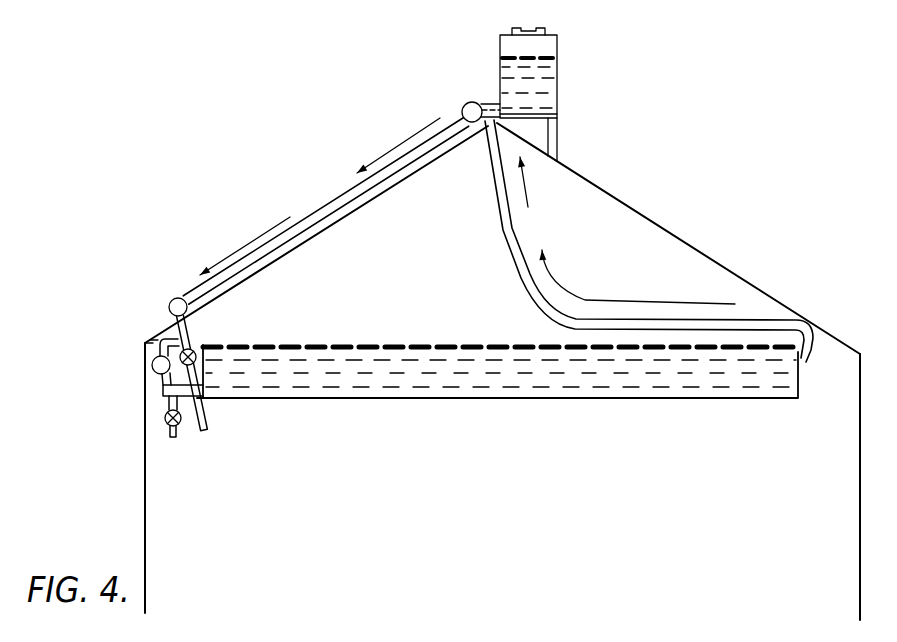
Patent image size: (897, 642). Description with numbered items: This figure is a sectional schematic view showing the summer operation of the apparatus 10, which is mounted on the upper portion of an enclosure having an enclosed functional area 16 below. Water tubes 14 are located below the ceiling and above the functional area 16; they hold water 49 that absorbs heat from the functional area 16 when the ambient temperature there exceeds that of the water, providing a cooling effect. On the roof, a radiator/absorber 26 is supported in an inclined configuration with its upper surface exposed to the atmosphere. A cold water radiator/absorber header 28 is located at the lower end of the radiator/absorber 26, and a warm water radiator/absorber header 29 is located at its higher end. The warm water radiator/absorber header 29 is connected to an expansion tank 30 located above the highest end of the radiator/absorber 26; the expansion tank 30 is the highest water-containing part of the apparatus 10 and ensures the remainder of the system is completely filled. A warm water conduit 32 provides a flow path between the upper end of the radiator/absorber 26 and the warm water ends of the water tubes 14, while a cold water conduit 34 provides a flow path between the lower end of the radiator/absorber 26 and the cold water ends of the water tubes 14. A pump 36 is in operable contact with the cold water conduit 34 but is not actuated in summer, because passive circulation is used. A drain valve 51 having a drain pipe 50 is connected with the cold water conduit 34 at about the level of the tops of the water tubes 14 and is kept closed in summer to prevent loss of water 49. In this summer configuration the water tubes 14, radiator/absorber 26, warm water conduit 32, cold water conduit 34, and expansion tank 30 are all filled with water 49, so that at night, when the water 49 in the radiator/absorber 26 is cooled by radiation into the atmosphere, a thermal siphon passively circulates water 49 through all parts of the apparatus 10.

The apparatus 10 is at (135, 208).
The water tubes 14 is at (697, 400).
The functional area 16 is at (480, 556).
The radiator/absorber 26 is at (337, 198).
The cold water radiator/absorber header 28 is at (170, 300).
The warm water radiator/absorber header 29 is at (466, 103).
The expansion tank 30 is at (558, 48).
The warm water conduit 32 is at (522, 231).
The cold water conduit 34 is at (143, 343).
The pump 36 is at (150, 369).
The water 49 is at (517, 87).
The drain pipe 50 is at (212, 412).
The drain valve 51 is at (197, 348).